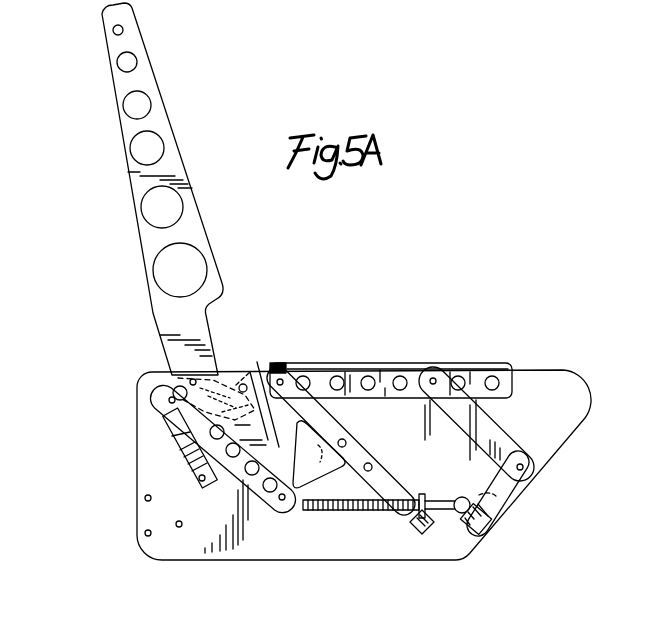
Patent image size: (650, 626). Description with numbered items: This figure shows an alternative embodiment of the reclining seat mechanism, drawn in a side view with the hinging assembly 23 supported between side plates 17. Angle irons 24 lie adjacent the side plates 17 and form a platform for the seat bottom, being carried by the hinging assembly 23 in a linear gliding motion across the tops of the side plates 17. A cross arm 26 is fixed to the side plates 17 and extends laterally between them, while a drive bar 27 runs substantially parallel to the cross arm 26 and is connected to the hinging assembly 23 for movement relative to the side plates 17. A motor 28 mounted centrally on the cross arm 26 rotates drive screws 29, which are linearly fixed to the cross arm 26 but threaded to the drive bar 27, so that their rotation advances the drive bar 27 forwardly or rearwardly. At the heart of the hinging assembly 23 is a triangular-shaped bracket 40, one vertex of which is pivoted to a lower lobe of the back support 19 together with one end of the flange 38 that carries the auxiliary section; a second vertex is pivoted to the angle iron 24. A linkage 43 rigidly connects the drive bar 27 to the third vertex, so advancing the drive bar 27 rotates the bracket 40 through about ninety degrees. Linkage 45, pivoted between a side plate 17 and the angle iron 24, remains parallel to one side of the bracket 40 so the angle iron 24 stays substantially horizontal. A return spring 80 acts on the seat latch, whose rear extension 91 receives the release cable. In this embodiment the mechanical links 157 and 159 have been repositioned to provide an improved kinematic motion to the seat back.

The side plates 17 is at (167, 552).
The back support 19 is at (118, 130).
The hinging assembly 23 is at (338, 327).
The angle irons 24 is at (478, 366).
The cross arm 26 is at (487, 535).
The drive bar 27 is at (425, 533).
The motor 28 is at (507, 512).
The drive screws 29 is at (343, 512).
The flange 38 is at (240, 468).
The triangular-shaped bracket 40 is at (332, 422).
The linkage 43 is at (491, 493).
The linkage 45 is at (483, 427).
The return spring 80 is at (238, 370).
The rear extension 91 is at (319, 454).
The mechanical link 157 is at (177, 463).
The mechanical link 159 is at (253, 363).